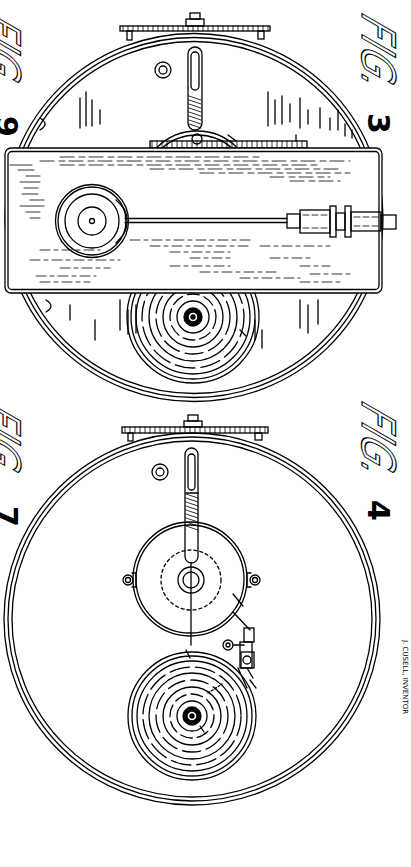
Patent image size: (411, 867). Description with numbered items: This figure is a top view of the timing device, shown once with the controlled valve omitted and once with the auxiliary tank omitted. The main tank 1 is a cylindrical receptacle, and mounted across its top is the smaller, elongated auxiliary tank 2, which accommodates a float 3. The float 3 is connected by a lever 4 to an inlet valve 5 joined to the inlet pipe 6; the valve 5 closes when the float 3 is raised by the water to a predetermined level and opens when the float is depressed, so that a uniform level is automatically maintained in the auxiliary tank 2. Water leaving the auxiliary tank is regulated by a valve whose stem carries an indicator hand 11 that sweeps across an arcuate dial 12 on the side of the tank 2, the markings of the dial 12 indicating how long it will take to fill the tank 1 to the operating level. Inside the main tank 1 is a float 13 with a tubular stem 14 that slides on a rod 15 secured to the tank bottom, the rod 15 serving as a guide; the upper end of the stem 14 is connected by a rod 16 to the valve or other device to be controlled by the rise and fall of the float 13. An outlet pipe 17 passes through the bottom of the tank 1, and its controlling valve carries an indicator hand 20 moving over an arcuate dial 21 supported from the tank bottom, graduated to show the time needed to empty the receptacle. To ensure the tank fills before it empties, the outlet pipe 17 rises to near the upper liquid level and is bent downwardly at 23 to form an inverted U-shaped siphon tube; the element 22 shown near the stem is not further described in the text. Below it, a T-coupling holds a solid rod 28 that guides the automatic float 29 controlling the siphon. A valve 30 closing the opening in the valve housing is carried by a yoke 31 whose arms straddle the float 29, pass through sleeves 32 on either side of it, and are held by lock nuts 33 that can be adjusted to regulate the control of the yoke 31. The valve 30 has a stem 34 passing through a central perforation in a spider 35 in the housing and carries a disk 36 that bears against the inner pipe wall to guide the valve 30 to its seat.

In FIG. 3, the main tank 1 is at (84, 358).
In FIG. 4, the main tank 1 is at (16, 632).
In FIG. 3, the auxiliary tank 2 is at (262, 293).
In FIG. 3, the float 3 is at (102, 232).
In FIG. 3, the lever 4 is at (195, 218).
In FIG. 3, the inlet valve 5 is at (189, 110).
In FIG. 4, the inlet valve 5 is at (162, 462).
In FIG. 3, the inlet pipe 6 is at (360, 232).
In FIG. 3, the indicator hand 11 is at (230, 138).
In FIG. 4, the indicator hand 11 is at (186, 705).
In FIG. 4, the arcuate dial 12 is at (202, 728).
In FIG. 4, the float 13 is at (192, 716).
In FIG. 3, the tubular stem 14 is at (186, 314).
In FIG. 3, the rod 15 is at (240, 332).
In FIG. 3, the rod 16 is at (210, 302).
In FIG. 3, the outlet pipe 17 is at (296, 138).
In FIG. 3, the indicator hand 20 is at (204, 22).
In FIG. 4, the indicator hand 20 is at (202, 424).
In FIG. 3, the arcuate dial 21 is at (120, 28).
In FIG. 4, the arcuate dial 21 is at (122, 430).
In FIG. 3, the stem 22 is at (201, 60).
In FIG. 4, the stem 22 is at (199, 458).
In FIG. 4, the downwardly bent portion 23 is at (199, 510).
In FIG. 4, the solid rod 28 is at (184, 587).
In FIG. 3, the automatic float 29 is at (150, 139).
In FIG. 4, the automatic float 29 is at (146, 545).
In FIG. 4, the valve 30 is at (251, 634).
In FIG. 4, the yoke 31 is at (259, 665).
In FIG. 4, the sleeves 32 is at (190, 656).
In FIG. 4, the lock nuts 33 is at (124, 578).
In FIG. 4, the stem 34 is at (254, 670).
In FIG. 4, the spider 35 is at (263, 696).
In FIG. 4, the disk 36 is at (226, 614).